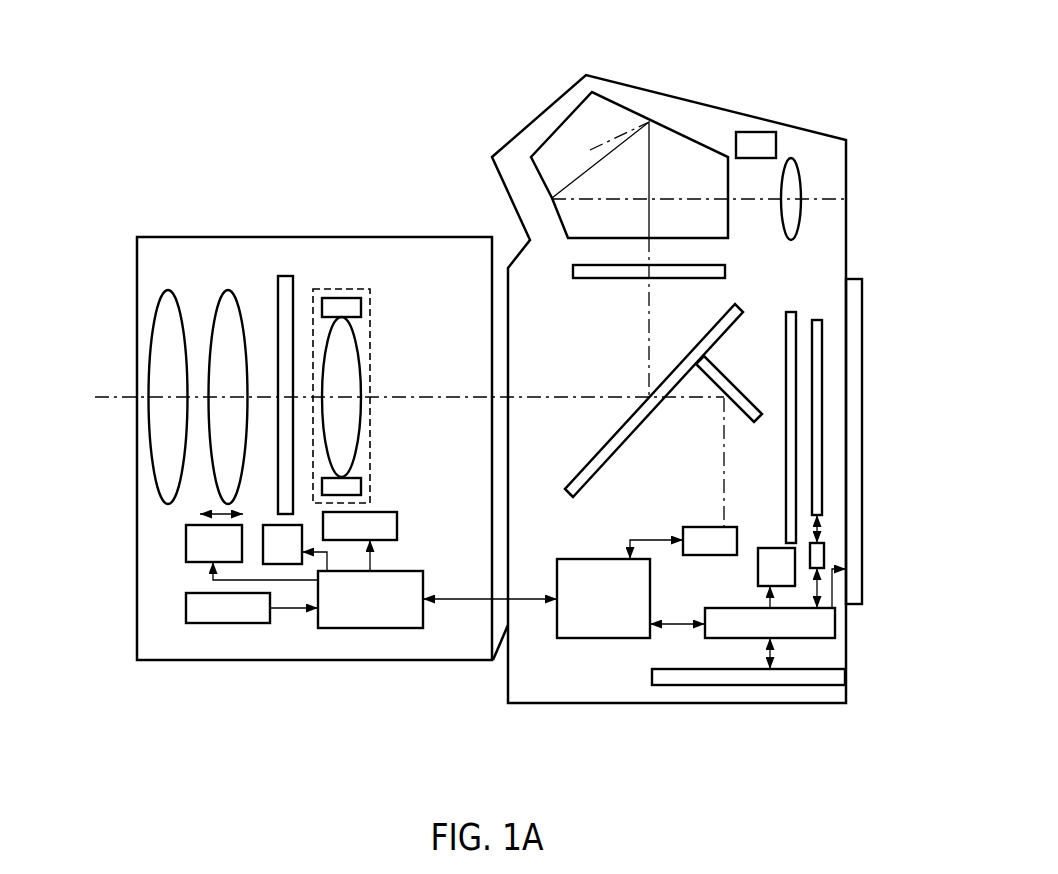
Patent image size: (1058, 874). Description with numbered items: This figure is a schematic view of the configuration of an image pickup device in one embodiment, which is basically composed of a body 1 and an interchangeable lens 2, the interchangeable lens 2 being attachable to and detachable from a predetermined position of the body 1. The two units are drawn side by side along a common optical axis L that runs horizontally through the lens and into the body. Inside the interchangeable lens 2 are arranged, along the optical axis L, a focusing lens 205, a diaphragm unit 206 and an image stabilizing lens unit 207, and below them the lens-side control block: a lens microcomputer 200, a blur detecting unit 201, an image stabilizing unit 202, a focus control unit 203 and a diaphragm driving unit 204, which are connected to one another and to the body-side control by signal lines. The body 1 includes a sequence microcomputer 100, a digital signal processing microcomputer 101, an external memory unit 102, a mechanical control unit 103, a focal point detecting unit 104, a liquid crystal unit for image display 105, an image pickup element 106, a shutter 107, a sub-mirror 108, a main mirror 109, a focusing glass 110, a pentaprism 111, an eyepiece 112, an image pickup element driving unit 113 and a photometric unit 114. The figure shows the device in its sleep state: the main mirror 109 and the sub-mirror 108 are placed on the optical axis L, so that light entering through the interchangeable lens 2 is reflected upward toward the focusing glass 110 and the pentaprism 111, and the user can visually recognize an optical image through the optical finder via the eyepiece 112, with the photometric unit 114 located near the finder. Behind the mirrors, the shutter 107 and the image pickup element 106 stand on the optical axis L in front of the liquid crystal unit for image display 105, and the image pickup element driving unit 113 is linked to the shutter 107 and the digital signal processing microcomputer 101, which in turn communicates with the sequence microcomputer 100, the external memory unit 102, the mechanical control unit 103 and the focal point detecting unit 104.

The body 1 is at (526, 82).
The interchangeable lens 2 is at (220, 145).
The optical axis L is at (110, 397).
The sequence microcomputer 100 is at (593, 638).
The digital signal processing microcomputer 101 is at (835, 624).
The external memory unit 102 is at (783, 685).
The mechanical control unit 103 is at (783, 586).
The focal point detecting unit 104 is at (713, 555).
The liquid crystal unit for image display 105 is at (858, 279).
The image pickup element 106 is at (823, 330).
The shutter 107 is at (796, 357).
The sub-mirror 108 is at (748, 398).
The main mirror 109 is at (740, 305).
The focusing glass 110 is at (587, 265).
The pentaprism 111 is at (668, 128).
The eyepiece 112 is at (790, 158).
The image pickup element driving unit 113 is at (824, 553).
The photometric unit 114 is at (758, 132).
The lens microcomputer 200 is at (336, 628).
The blur detecting unit 201 is at (216, 623).
The image stabilizing unit 202 is at (387, 540).
The focus control unit 203 is at (186, 546).
The diaphragm driving unit 204 is at (287, 564).
The focusing lens 205 is at (227, 290).
The diaphragm unit 206 is at (289, 276).
The image stabilizing lens unit 207 is at (353, 289).